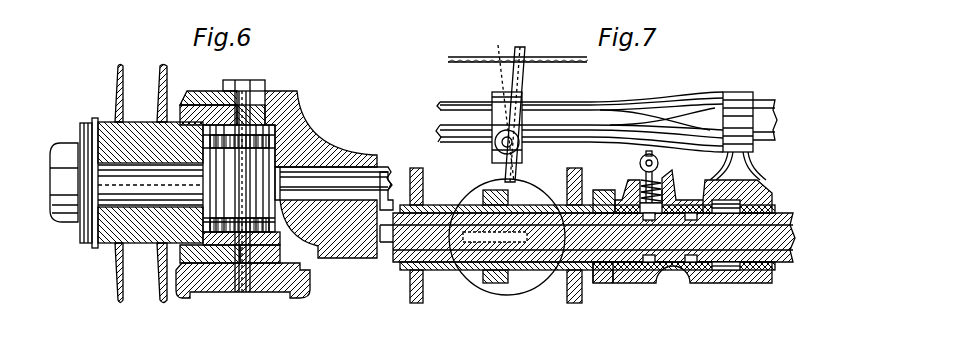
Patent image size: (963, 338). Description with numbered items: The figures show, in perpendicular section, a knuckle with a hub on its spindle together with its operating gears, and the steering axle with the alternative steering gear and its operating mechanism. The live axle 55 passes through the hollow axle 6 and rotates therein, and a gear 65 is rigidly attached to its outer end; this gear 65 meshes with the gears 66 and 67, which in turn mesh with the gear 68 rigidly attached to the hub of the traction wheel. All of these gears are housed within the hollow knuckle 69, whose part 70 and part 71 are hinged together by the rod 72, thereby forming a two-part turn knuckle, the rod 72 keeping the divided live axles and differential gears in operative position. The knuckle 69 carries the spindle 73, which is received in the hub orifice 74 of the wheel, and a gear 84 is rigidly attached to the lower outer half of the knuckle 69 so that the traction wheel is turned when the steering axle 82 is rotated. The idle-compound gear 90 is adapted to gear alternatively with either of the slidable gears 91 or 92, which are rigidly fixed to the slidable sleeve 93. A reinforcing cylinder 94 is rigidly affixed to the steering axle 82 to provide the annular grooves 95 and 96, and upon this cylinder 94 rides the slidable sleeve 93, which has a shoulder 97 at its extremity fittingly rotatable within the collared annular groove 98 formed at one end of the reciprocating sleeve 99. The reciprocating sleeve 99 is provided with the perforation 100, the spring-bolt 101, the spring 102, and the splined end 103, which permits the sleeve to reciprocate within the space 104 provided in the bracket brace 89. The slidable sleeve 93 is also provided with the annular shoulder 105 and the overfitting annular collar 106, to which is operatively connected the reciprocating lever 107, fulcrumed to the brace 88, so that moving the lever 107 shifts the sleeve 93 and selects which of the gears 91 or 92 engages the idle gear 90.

In FIG. 6, the idle-compound gear 90 is at (287, 6).
In FIG. 6, the part of the knuckle 70 is at (184, 250).
In FIG. 6, the hub orifice 74 is at (140, 137).
In FIG. 6, the spindle 73 is at (150, 185).
In FIG. 6, the gear 68 is at (186, 92).
In FIG. 6, the rod 72 is at (244, 85).
In FIG. 6, the gear 66 is at (299, 104).
In FIG. 6, the hollow knuckle 69 is at (340, 133).
In FIG. 6, the gear 65 is at (242, 178).
In FIG. 6, the live axle 55 is at (335, 178).
In FIG. 6, the part of the knuckle 71 is at (300, 222).
In FIG. 6, the gear 67 is at (268, 236).
In FIG. 6, the gear 84 is at (262, 292).
In FIG. 7, the reciprocating lever 107 is at (521, 85).
In FIG. 7, the perpendicular brace 88 is at (518, 158).
In FIG. 7, the hollow axle 6 is at (446, 120).
In FIG. 7, the slidable gear 91 is at (468, 228).
In FIG. 7, the slidable gear 92 is at (567, 177).
In FIG. 7, the slidable sleeve 93 is at (401, 264).
In FIG. 7, the reinforcing cylinder 94 is at (436, 260).
In FIG. 7, the steering axle 82 is at (772, 260).
In FIG. 7, the overfitting annular collar 106 is at (492, 190).
In FIG. 7, the annular shoulder 105 is at (500, 283).
In FIG. 7, the bracket brace 89 is at (772, 194).
In FIG. 7, the collared annular groove 98 is at (604, 190).
In FIG. 7, the perforation 100 is at (641, 192).
In FIG. 7, the spring-bolt 101 is at (658, 206).
In FIG. 7, the spring 102 is at (663, 188).
In FIG. 7, the splined end 103 is at (699, 198).
In FIG. 7, the space 104 is at (720, 198).
In FIG. 7, the shoulder 97 is at (612, 273).
In FIG. 7, the reciprocating sleeve 99 is at (640, 283).
In FIG. 7, the annular groove 95 is at (652, 262).
In FIG. 7, the annular groove 96 is at (690, 262).